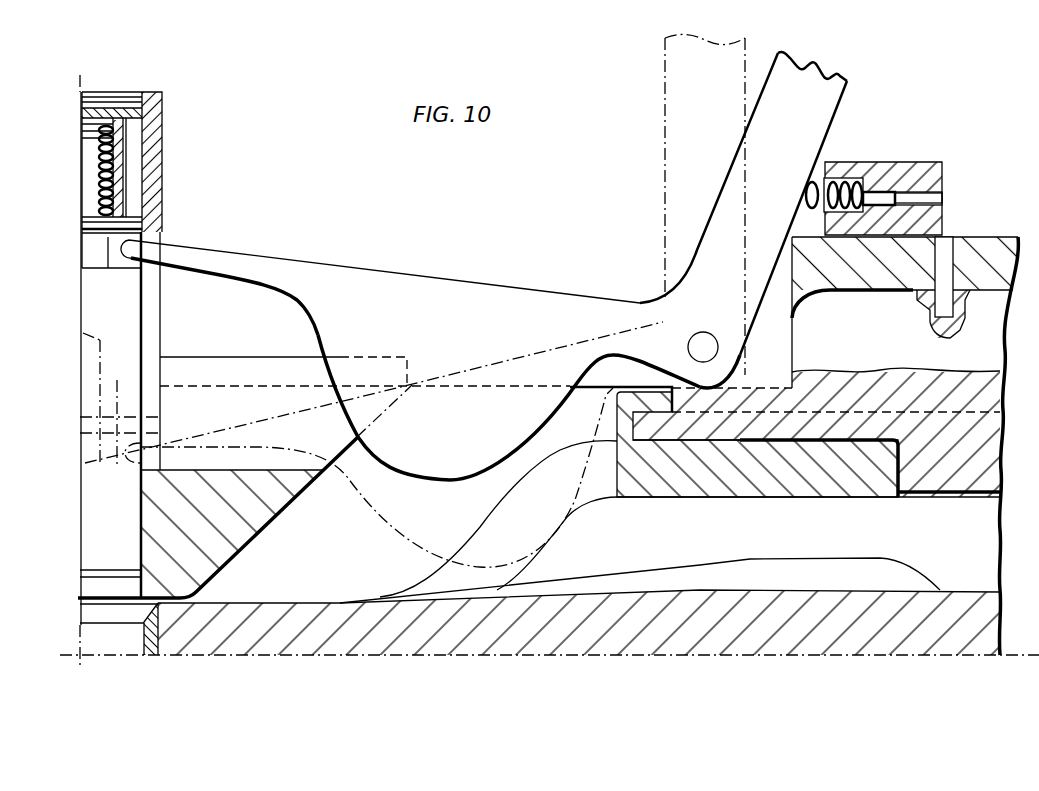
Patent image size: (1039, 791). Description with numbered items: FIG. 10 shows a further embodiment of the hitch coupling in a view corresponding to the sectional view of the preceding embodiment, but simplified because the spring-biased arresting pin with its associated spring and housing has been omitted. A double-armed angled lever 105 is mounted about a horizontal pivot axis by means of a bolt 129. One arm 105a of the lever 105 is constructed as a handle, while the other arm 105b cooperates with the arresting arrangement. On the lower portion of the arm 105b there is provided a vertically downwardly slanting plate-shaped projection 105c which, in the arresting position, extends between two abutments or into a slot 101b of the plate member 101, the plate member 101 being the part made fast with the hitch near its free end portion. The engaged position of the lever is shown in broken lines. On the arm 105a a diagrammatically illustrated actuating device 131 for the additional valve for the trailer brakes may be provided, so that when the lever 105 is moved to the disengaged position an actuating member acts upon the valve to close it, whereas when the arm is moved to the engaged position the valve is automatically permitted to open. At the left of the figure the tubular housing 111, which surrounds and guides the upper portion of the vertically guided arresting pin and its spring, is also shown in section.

The plate member 101 is at (712, 476).
The slot of the plate member 101b is at (538, 512).
The double-armed angled lever 105 is at (842, 126).
The arm of the lever 105a is at (817, 95).
The arm of the lever 105b is at (203, 258).
The plate-shaped projection 105c is at (446, 462).
The housing 111 is at (157, 163).
The bolt 129 is at (716, 348).
The actuating device 131 is at (928, 170).